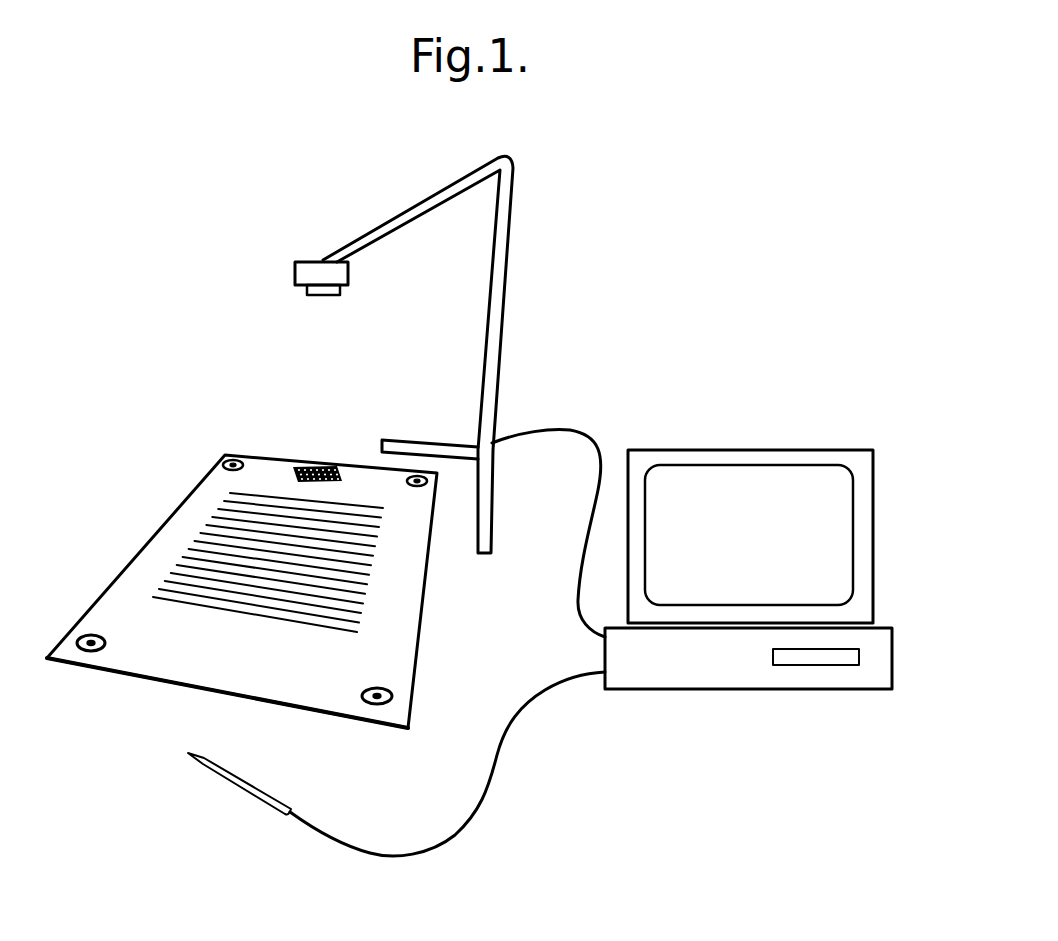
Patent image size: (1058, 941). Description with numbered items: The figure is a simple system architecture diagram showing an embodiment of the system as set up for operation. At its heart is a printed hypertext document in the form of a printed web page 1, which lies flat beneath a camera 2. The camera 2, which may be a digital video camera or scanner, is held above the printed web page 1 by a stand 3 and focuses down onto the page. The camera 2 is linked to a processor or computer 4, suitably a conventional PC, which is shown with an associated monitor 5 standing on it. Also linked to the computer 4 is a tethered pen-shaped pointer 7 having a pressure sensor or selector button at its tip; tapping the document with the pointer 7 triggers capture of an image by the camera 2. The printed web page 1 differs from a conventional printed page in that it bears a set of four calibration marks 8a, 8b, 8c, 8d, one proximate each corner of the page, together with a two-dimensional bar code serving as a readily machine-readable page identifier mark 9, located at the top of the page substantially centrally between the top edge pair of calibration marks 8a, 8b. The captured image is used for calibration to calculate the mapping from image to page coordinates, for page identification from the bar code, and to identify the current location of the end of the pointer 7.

The printed web page 1 is at (162, 543).
The camera 2 is at (312, 270).
The stand 3 is at (508, 250).
The computer 4 is at (878, 657).
The display monitor 5 is at (862, 538).
The pointer 7 is at (228, 773).
The calibration mark 8a is at (237, 461).
The calibration mark 8b is at (412, 488).
The calibration mark 8c is at (383, 705).
The calibration mark 8d is at (80, 650).
The page identifier mark 9 is at (321, 462).